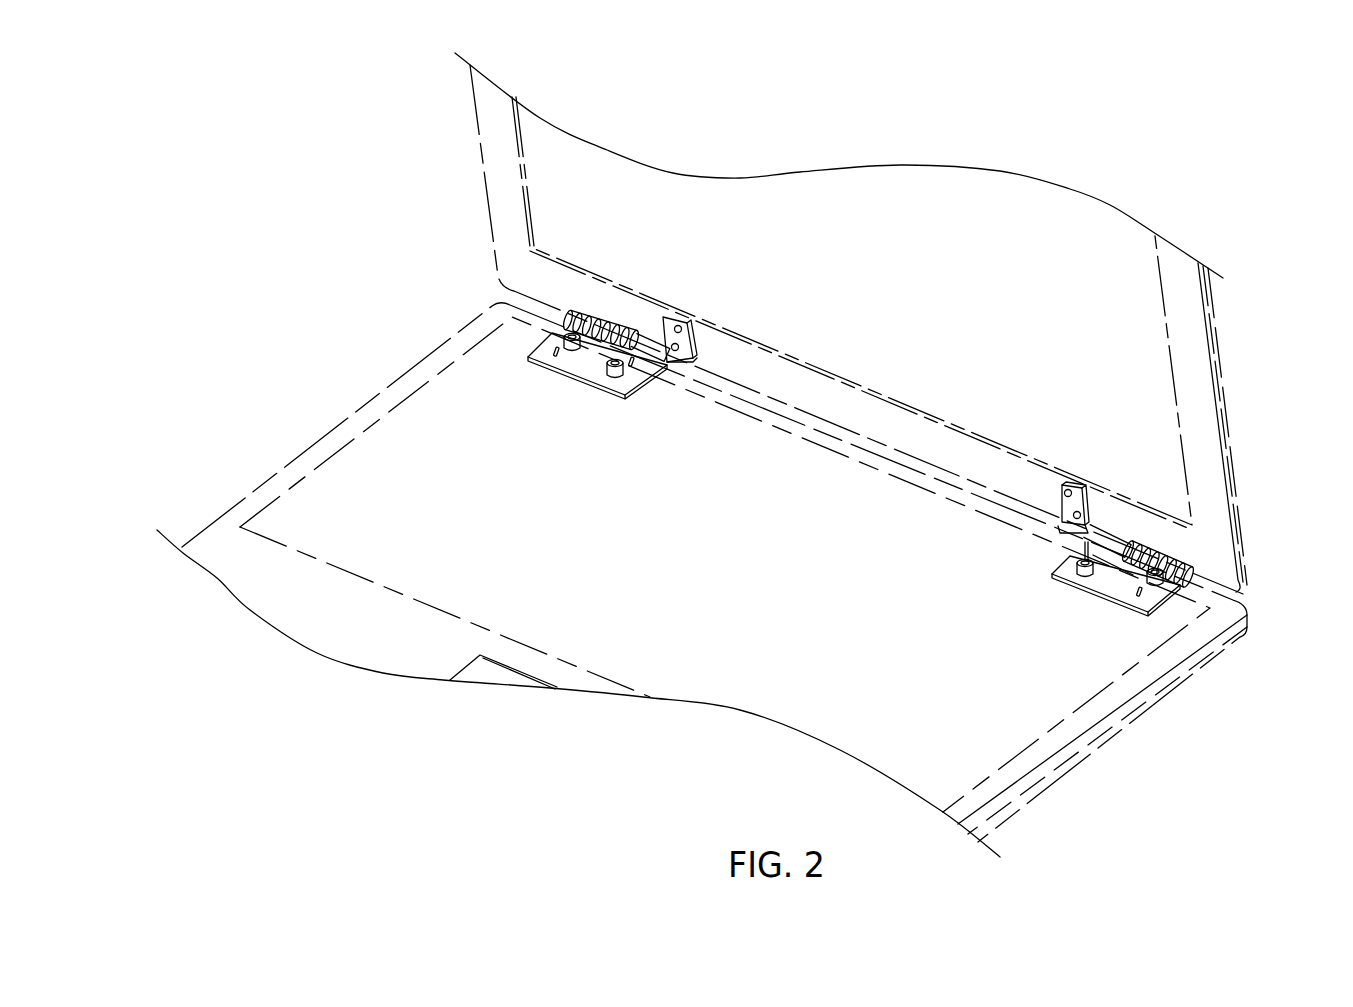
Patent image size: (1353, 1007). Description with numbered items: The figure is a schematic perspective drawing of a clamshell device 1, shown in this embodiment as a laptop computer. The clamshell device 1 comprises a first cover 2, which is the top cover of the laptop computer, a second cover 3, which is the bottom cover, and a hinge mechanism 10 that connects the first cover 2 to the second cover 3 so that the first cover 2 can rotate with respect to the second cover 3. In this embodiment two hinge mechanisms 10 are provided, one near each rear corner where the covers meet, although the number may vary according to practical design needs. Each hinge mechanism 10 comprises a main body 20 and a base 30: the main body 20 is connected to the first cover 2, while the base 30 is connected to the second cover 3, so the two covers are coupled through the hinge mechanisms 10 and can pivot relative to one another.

The clamshell device 1 is at (1254, 142).
The first cover 2 is at (1213, 370).
The second cover 3 is at (402, 432).
The hinge mechanism 10 is at (529, 329).
The main body 20 is at (672, 346).
The base 30 is at (577, 363).